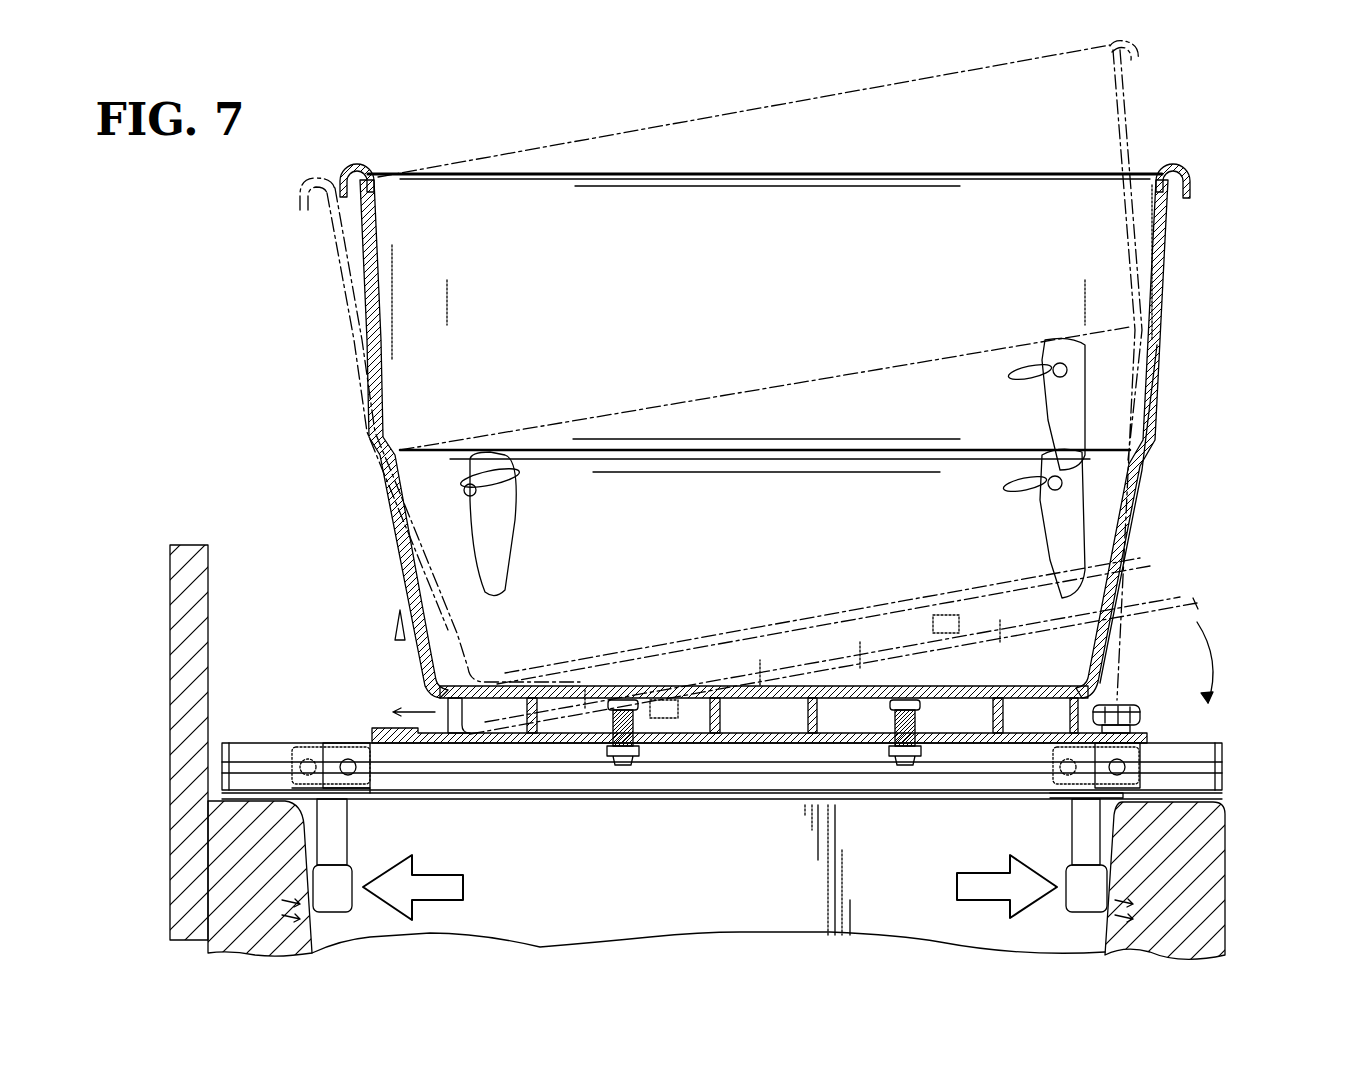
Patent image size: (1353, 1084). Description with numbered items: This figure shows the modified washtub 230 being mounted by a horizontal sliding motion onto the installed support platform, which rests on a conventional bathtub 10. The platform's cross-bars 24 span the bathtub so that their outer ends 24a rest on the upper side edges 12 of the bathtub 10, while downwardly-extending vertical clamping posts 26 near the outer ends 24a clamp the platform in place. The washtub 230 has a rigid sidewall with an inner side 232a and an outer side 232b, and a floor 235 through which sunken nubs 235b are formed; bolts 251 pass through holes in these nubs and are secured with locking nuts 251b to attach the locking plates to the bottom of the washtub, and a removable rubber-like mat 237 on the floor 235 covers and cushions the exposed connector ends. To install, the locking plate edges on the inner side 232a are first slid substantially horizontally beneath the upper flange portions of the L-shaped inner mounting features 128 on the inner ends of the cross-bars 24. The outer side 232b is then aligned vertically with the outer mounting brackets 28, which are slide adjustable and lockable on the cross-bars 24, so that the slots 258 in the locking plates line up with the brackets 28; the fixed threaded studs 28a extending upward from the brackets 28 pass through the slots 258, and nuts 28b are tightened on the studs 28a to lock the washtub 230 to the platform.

The bathtub 10 is at (1210, 912).
The upper side edges 12 is at (1163, 805).
The cross-bars 24 is at (545, 780).
The outer ends 24a is at (1208, 750).
The vertical clamping posts 26 is at (332, 832).
The brackets 28 is at (330, 767).
The studs 28a is at (1120, 733).
The nuts 28b is at (1118, 705).
The inner mounting features 128 is at (380, 730).
The washtub 230 is at (1207, 257).
The inner side 232a is at (367, 348).
The outer side 232b is at (1163, 390).
The floor 235 is at (466, 700).
The sunken nubs 235b is at (650, 712).
The mat 237 is at (565, 695).
The bolts 251 is at (612, 728).
The locking nuts 251b is at (622, 766).
The slots 258 is at (1108, 708).